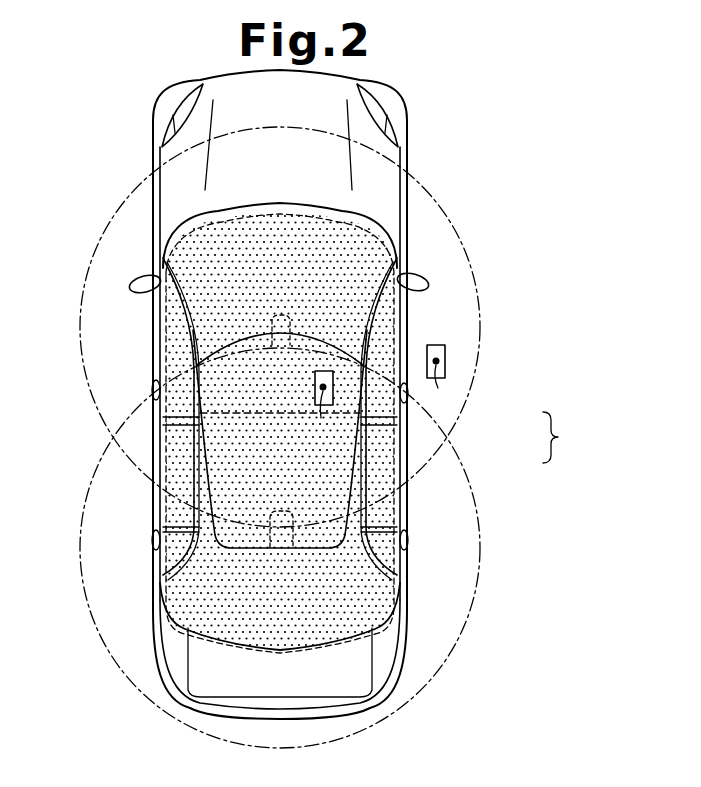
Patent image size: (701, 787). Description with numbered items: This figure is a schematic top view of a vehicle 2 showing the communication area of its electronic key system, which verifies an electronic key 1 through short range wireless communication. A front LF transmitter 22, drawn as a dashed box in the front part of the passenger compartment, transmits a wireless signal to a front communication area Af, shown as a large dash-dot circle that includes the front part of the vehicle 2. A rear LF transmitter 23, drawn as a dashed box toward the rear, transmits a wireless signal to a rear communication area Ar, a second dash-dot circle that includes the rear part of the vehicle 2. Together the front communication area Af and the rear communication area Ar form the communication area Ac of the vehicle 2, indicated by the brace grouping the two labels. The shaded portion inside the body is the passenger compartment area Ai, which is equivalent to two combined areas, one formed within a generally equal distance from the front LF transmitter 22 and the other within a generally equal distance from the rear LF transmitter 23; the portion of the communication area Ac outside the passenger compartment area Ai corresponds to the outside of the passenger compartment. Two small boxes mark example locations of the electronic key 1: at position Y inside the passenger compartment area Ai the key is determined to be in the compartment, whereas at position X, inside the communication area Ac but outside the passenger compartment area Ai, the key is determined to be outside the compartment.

The electronic key 1 is at (314, 387).
The vehicle 2 is at (429, 112).
The front LF transmitter 22 is at (292, 312).
The rear LF transmitter 23 is at (294, 508).
The passenger compartment area Ai is at (405, 311).
The front communication area Af is at (465, 413).
The rear communication area Ar is at (465, 468).
The communication area Ac is at (566, 437).
The position X is at (439, 388).
The position Y is at (319, 416).